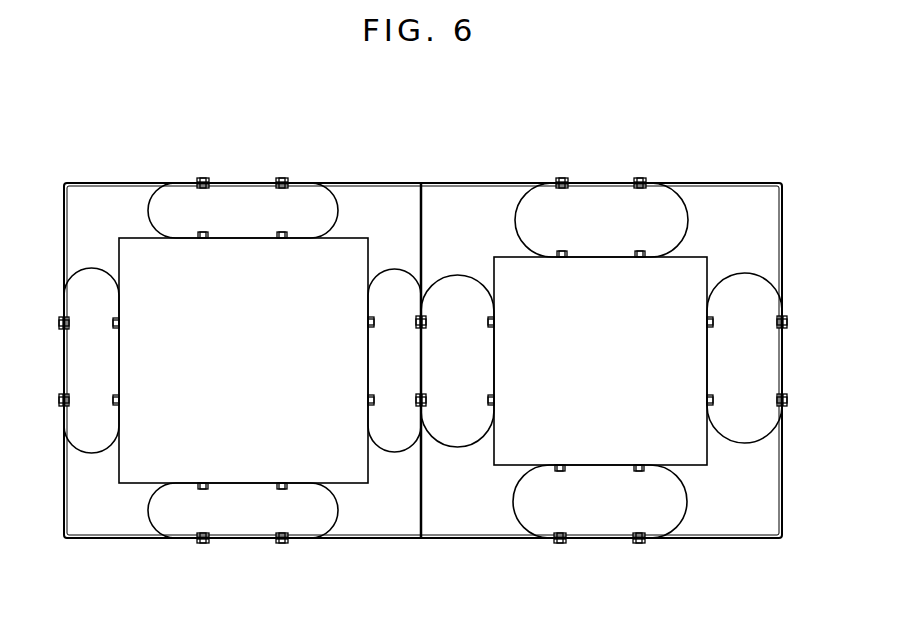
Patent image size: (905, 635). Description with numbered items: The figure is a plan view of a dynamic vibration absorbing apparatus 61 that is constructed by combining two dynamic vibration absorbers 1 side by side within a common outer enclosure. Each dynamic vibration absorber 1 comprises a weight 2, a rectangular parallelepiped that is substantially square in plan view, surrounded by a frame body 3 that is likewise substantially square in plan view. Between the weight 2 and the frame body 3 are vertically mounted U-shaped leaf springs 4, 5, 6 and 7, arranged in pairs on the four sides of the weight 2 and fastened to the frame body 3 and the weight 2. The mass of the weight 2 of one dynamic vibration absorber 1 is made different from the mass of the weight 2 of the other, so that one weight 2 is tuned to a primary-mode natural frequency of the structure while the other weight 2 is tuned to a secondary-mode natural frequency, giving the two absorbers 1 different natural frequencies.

The dynamic vibration absorber 1 is at (82, 178).
The weight 2 is at (343, 445).
The frame body 3 is at (93, 540).
The U-shaped leaf spring 4 is at (80, 270).
The U-shaped leaf spring 5 is at (393, 271).
The U-shaped leaf spring 6 is at (156, 192).
The U-shaped leaf spring 7 is at (149, 515).
The dynamic vibration absorbing apparatus 61 is at (598, 140).